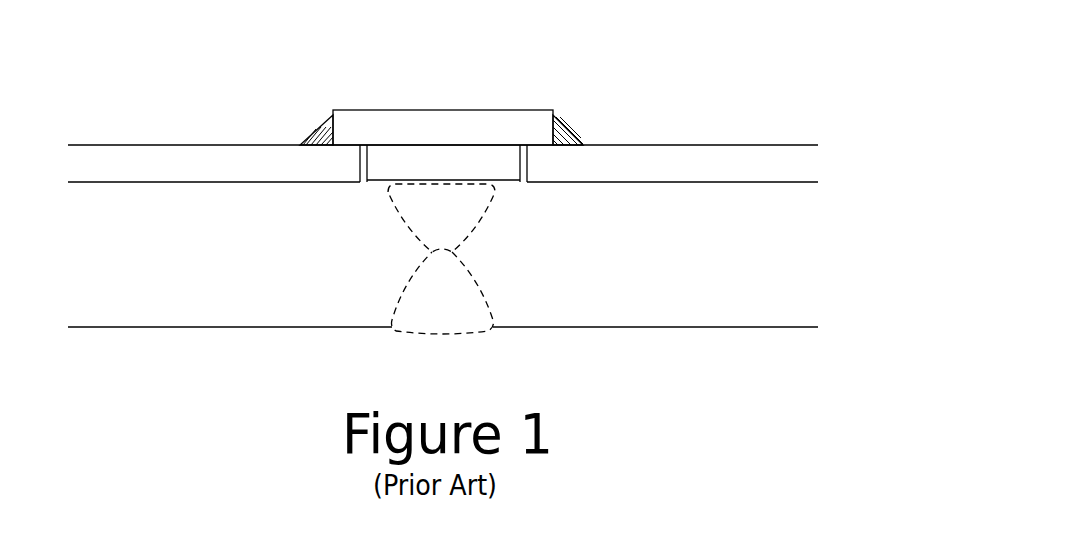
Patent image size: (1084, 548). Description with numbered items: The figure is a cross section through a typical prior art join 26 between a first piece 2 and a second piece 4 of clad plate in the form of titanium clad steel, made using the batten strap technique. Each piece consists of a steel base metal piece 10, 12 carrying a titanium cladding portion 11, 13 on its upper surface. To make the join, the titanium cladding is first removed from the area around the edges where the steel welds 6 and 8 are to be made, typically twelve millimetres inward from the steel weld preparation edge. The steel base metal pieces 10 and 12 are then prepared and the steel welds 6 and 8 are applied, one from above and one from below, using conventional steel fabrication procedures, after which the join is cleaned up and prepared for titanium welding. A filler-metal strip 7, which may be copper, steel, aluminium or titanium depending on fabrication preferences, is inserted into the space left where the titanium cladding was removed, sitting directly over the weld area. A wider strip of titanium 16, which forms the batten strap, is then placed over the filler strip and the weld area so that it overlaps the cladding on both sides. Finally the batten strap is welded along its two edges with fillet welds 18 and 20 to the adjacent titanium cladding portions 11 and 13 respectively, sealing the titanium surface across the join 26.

The first piece 2 is at (230, 273).
The second piece 4 is at (655, 275).
The steel weld 6 is at (448, 230).
The filler-metal strip 7 is at (448, 174).
The steel weld 8 is at (448, 318).
The steel base metal piece 10 is at (288, 266).
The titanium cladding portion 11 is at (283, 176).
The steel base metal piece 12 is at (645, 260).
The titanium cladding portion 13 is at (633, 180).
The strip of titanium 16 is at (455, 136).
The fillet weld 18 is at (316, 125).
The fillet weld 20 is at (578, 132).
The join 26 is at (483, 95).